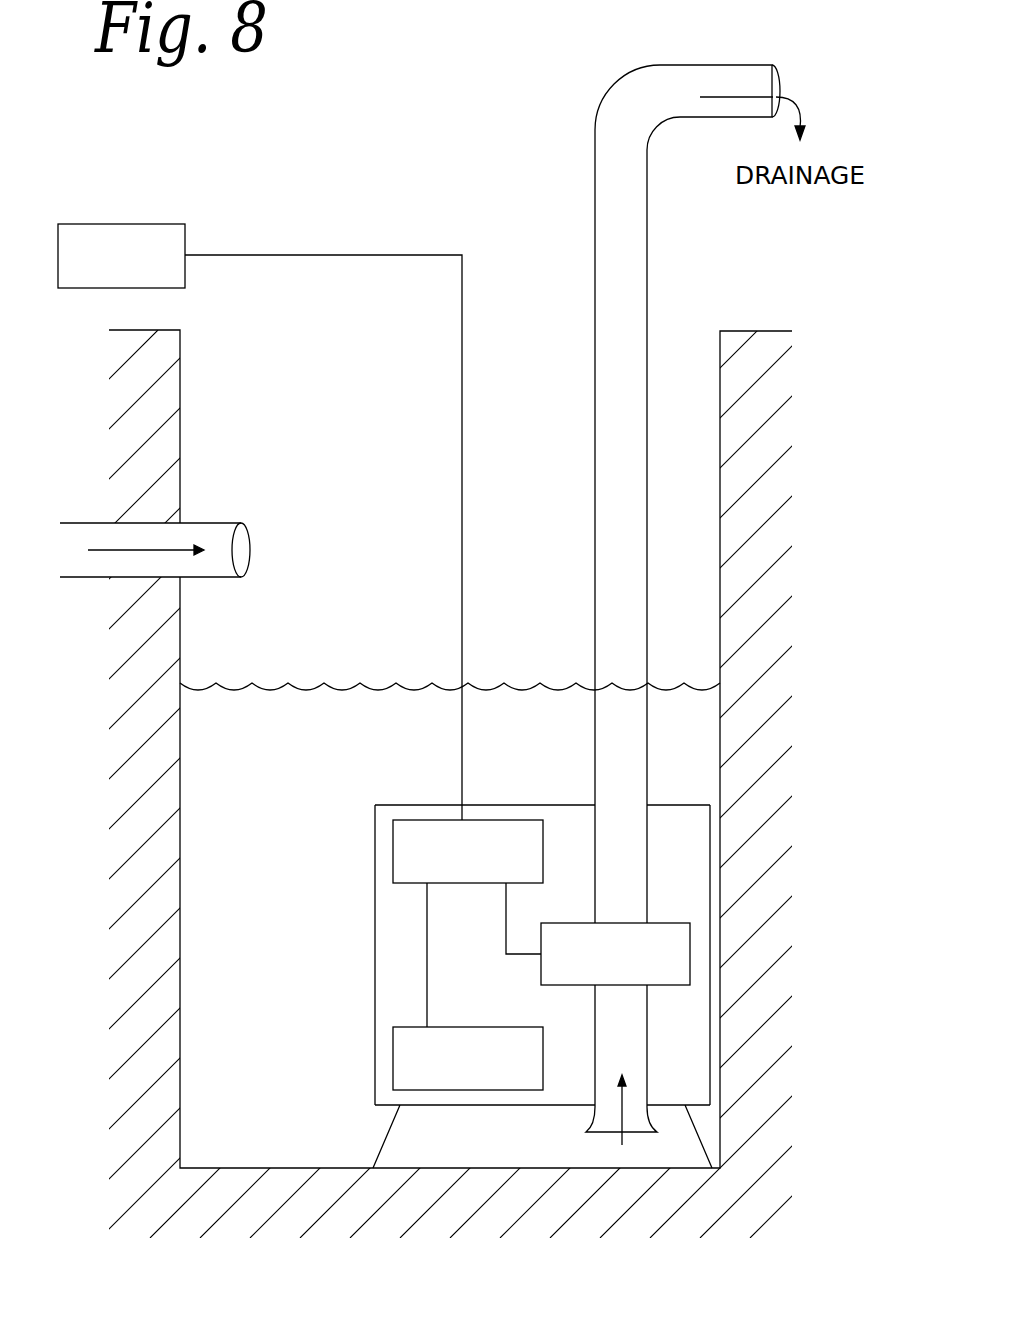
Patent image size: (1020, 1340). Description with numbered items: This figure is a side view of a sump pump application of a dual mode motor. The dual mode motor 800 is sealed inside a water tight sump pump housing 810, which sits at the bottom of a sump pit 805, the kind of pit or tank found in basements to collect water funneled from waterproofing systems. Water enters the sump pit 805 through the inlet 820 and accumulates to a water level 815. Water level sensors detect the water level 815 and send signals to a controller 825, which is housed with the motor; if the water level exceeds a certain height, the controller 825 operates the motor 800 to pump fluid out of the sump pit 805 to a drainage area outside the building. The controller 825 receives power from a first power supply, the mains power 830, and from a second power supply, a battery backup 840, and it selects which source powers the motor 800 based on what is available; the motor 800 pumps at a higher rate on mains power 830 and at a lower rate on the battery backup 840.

The dual mode motor 800 is at (690, 952).
The sump pit 805 is at (182, 627).
The sump pump housing 810 is at (710, 860).
The water level 815 is at (517, 688).
The inlet 820 is at (212, 522).
The controller 825 is at (393, 850).
The mains power 830 is at (131, 224).
The battery backup 840 is at (393, 1062).